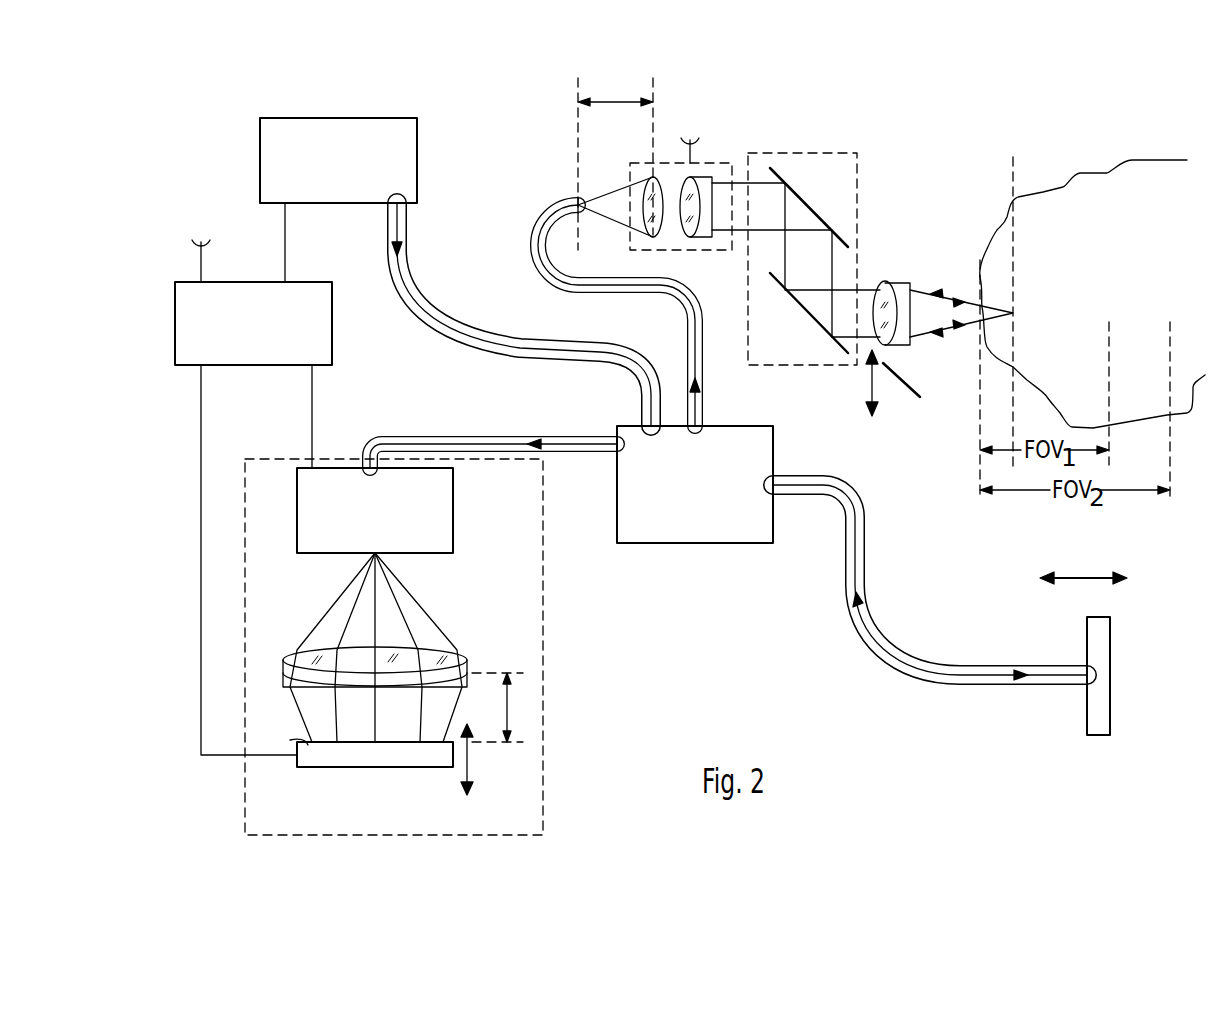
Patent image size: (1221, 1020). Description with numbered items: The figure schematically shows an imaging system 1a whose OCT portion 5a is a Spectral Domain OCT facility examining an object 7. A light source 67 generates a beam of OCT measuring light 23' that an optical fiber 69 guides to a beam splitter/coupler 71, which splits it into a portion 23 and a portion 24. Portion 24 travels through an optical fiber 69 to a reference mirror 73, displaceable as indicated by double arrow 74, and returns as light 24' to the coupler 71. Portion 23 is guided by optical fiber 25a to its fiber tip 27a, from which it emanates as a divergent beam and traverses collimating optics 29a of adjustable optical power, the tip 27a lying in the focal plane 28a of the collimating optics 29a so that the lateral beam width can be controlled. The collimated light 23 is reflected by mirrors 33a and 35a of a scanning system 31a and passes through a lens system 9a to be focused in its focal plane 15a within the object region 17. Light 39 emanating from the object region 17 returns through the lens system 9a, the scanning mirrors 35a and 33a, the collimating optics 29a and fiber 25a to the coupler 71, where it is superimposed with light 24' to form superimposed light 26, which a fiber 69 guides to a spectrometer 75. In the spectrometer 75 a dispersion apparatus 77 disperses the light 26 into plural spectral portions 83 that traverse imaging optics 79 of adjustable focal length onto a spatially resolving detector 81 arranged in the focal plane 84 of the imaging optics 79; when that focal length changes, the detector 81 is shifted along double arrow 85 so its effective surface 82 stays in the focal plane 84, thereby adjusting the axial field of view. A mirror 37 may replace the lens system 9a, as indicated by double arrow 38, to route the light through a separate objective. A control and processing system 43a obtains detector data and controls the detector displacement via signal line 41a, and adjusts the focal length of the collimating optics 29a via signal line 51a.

The imaging system 1a is at (203, 153).
The OCT portion 5a is at (827, 688).
The object 7 is at (1092, 188).
The lens system 9a is at (895, 282).
The focal plane 15a is at (1011, 170).
The object region 17 is at (1000, 282).
The portion of OCT measuring light 23 is at (795, 280).
The beam of OCT measuring light 23' is at (521, 314).
The portion of OCT measuring light 24 is at (1026, 648).
The reflected reference light 24' is at (930, 580).
The optical fiber 25a is at (656, 300).
The superimposed light 26 is at (530, 436).
The fiber tip 27a is at (575, 197).
The focal plane of the collimating optics 28a is at (578, 248).
The collimating optics 29a is at (722, 250).
The scanning system 31a is at (800, 153).
The mirror 33a is at (808, 317).
The mirror 35a is at (806, 203).
The mirror 37 is at (900, 392).
The double arrow 38 is at (870, 385).
The light emanating from the object region 39 is at (930, 292).
The signal line 41a is at (285, 243).
The control and processing system 43a is at (332, 332).
The signal line 51a is at (201, 258).
The light source 67 is at (417, 150).
The optical fiber 69 is at (530, 262).
The beam splitter/coupler 71 is at (697, 543).
The reference mirror 73 is at (1110, 641).
The double arrow 74 is at (1087, 575).
The spectrometer 75 is at (545, 620).
The dispersion apparatus 77 is at (453, 510).
The imaging optics 79 is at (467, 660).
The spatially resolving detector 81 is at (326, 768).
The effective surface 82 is at (303, 735).
The spectral portions 83 is at (347, 622).
The focal plane 84 is at (527, 745).
The double arrow 85 is at (474, 764).